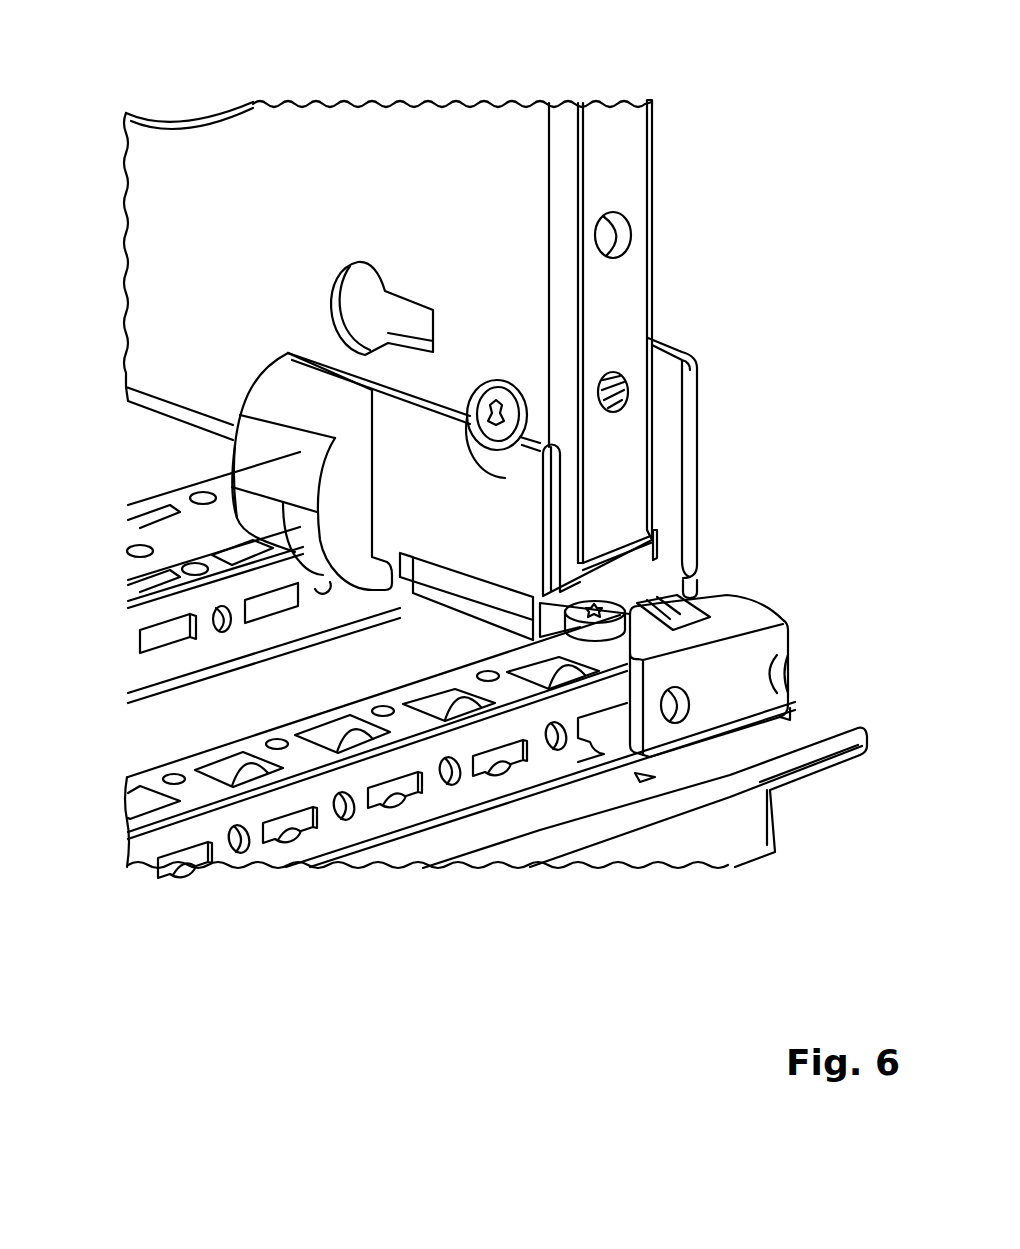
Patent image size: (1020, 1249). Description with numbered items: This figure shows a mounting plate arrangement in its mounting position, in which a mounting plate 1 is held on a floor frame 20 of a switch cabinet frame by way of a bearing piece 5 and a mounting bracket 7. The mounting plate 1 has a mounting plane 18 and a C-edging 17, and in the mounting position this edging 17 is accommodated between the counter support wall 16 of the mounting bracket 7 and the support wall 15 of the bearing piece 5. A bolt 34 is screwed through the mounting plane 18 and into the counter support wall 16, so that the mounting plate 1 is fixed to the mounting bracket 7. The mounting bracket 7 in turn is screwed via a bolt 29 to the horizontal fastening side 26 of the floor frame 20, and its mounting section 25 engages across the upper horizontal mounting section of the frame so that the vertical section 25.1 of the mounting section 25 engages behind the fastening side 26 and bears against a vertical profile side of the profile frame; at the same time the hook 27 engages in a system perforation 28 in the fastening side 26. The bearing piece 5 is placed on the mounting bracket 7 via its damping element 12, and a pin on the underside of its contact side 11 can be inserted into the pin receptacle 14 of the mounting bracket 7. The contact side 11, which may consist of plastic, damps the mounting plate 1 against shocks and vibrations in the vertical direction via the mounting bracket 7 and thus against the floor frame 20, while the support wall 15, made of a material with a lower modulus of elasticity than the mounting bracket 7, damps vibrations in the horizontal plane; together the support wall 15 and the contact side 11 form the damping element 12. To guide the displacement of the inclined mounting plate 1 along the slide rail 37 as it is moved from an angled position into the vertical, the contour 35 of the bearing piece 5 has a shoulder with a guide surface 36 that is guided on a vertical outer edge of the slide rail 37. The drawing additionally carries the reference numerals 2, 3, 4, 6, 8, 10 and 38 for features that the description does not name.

The mounting plate 1 is at (420, 80).
The fastening device 2 is at (748, 468).
The lower guide rail assembly 3 is at (585, 928).
The upper rail assembly 4 is at (722, 75).
The bearing piece 5 is at (253, 470).
The rail end portion 6 is at (630, 520).
The mounting bracket 7 is at (782, 650).
The mounting plate 8 is at (735, 845).
The ledge 10 is at (606, 556).
The contact side 11 is at (630, 553).
The damping element 12 is at (640, 587).
The pin receptacle 14 is at (745, 597).
The support wall 15 is at (548, 473).
The counter support wall 16 is at (686, 349).
The C-edging 17 is at (670, 236).
The mounting plane 18 is at (172, 206).
The floor frame 20 is at (122, 872).
The mounting section 25 is at (745, 612).
The vertical section 25.1 is at (770, 700).
The horizontal fastening side 26 is at (404, 722).
The hook 27 is at (545, 655).
The system perforation 28 is at (535, 640).
The bolt 29 is at (598, 618).
The bolt 34 is at (497, 395).
The contour 35 is at (253, 515).
The guide surface 36 is at (292, 565).
The slide rail 37 is at (140, 566).
The plate edge 38 is at (828, 765).